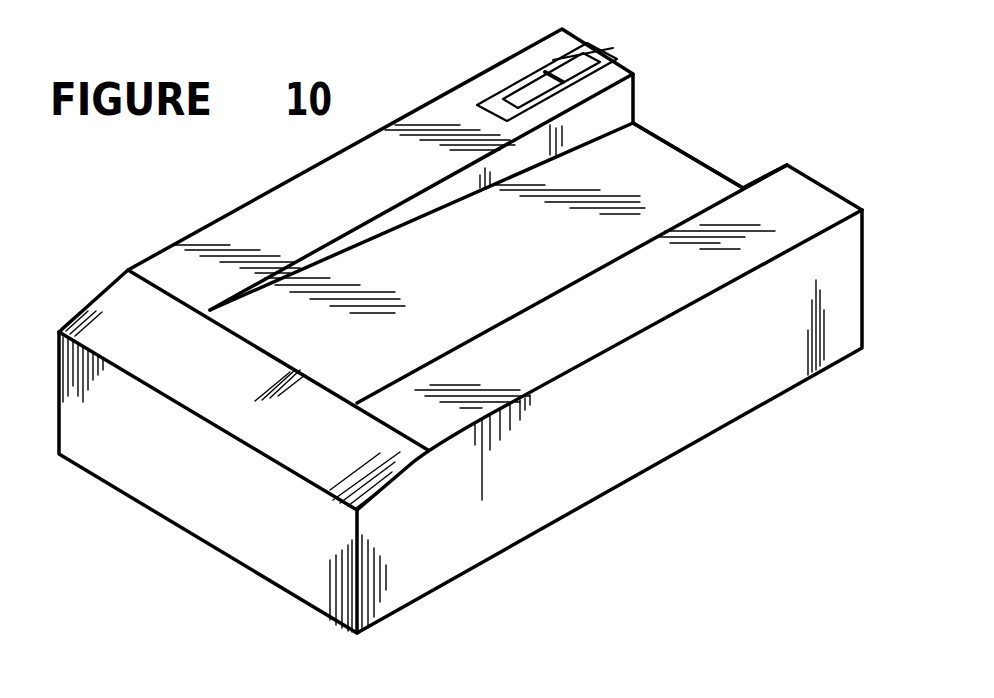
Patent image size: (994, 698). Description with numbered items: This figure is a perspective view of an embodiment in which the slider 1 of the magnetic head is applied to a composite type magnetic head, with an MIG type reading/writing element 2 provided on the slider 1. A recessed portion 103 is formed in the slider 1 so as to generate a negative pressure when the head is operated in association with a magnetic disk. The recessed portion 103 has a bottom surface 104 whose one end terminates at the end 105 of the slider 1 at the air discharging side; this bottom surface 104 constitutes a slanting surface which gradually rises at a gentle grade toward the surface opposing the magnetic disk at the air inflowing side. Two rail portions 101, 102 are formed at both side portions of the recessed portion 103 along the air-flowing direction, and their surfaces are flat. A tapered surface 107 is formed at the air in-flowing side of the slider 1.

The slider 1 is at (663, 420).
The MIG type reading/writing element 2 is at (570, 70).
The rail portion 101 is at (370, 180).
The rail portion 102 is at (757, 220).
The recessed portion 103 is at (577, 185).
The bottom surface 104 is at (307, 277).
The end of the slider 105 is at (710, 167).
The tapered surface 107 is at (125, 332).